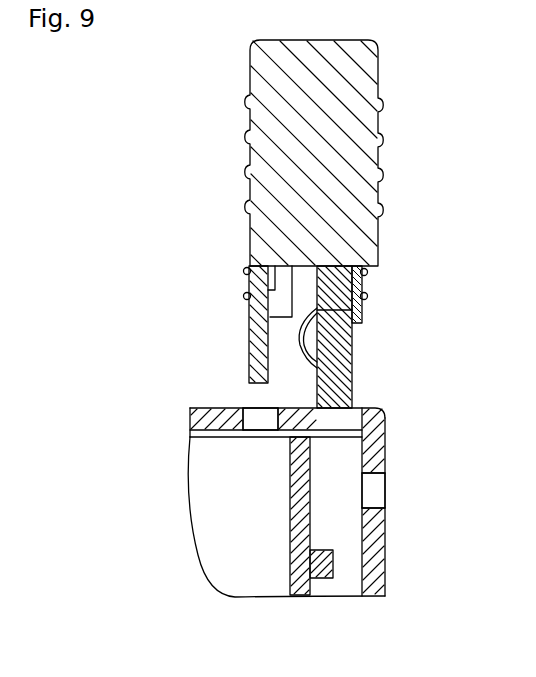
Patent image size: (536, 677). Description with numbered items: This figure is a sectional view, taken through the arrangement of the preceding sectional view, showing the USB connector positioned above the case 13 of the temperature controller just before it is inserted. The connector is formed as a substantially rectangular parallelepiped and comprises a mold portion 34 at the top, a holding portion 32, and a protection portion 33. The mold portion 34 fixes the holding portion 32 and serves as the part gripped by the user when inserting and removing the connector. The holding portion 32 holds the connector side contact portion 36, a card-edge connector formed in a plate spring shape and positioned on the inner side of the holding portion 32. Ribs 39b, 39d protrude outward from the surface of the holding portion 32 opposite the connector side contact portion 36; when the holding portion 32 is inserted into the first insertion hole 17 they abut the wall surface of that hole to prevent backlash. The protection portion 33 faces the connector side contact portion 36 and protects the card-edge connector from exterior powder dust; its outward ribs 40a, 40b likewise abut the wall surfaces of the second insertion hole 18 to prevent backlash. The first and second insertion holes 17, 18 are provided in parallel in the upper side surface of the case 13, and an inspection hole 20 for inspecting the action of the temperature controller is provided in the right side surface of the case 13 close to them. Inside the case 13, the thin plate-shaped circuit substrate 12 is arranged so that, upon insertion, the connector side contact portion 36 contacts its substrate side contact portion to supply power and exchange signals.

The mold portion 34 is at (379, 71).
The protection portion 33 is at (250, 346).
The rib 40a is at (244, 296).
The rib 40b is at (244, 271).
The rib 39b is at (367, 274).
The rib 39d is at (367, 295).
The connector side contact portion 36 is at (356, 317).
The holding portion 32 is at (354, 352).
The first insertion hole 17 is at (345, 422).
The second insertion hole 18 is at (262, 423).
The inspection hole 20 is at (365, 488).
The case 13 is at (386, 551).
The circuit substrate 12 is at (290, 566).